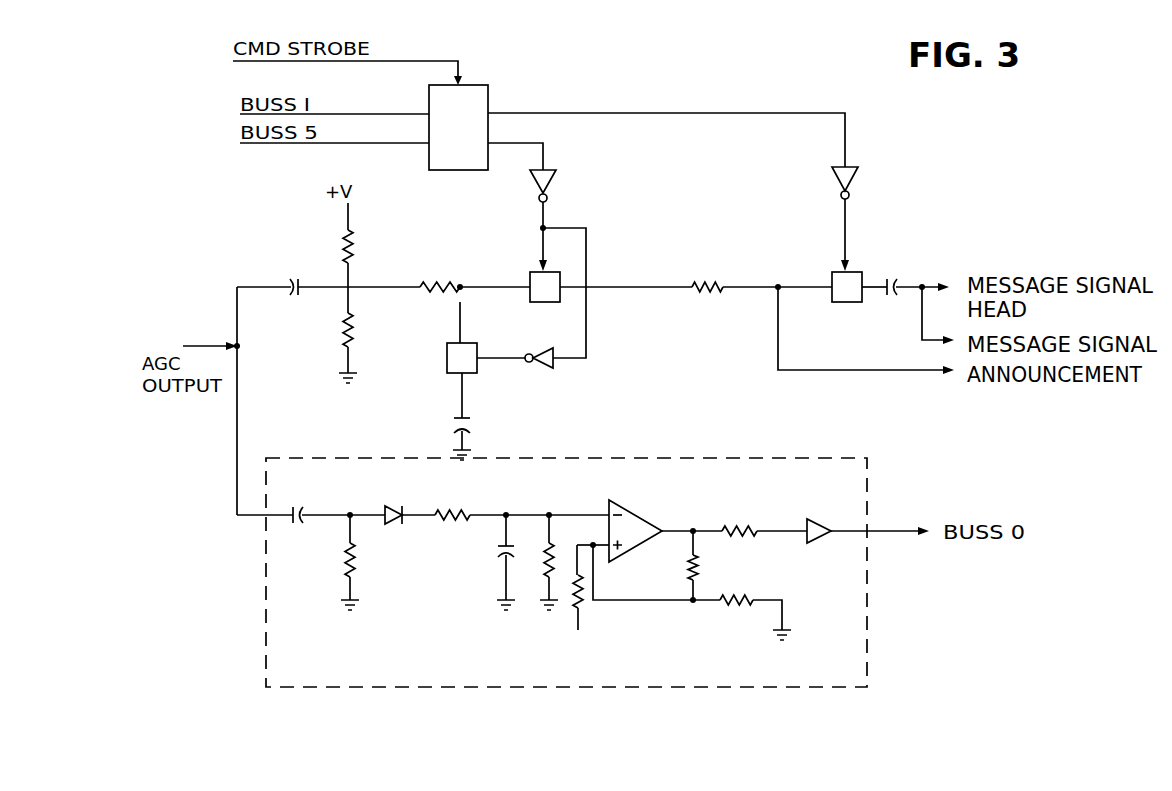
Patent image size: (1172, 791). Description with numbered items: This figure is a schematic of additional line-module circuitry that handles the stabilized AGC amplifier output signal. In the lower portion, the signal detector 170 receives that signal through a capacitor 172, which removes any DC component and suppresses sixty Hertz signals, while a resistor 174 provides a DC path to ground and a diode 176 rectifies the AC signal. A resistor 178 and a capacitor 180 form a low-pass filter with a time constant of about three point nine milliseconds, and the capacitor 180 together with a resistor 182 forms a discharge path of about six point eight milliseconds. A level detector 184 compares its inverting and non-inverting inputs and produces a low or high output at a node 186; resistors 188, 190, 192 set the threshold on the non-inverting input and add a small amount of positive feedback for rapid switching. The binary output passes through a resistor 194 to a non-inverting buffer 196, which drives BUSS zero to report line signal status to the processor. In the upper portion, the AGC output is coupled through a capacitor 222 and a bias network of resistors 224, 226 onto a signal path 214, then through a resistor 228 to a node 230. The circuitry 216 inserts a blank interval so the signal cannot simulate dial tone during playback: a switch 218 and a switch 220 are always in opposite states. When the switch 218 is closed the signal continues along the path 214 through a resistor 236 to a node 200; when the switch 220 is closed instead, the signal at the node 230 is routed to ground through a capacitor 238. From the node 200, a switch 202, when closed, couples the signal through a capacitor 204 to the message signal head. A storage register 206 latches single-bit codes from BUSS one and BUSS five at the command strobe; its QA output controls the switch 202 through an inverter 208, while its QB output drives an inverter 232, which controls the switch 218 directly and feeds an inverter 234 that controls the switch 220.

The signal detector 170 is at (600, 450).
The capacitor 172 is at (298, 502).
The resistor 174 is at (363, 562).
The diode 176 is at (392, 503).
The resistor 178 is at (463, 502).
The capacitor 180 is at (490, 555).
The resistor 182 is at (545, 560).
The level detector 184 is at (620, 502).
The node 186 is at (693, 525).
The resistor 188 is at (583, 603).
The resistor 190 is at (702, 568).
The resistor 192 is at (737, 607).
The resistor 194 is at (732, 522).
The non-inverting buffer 196 is at (827, 513).
The node 200 is at (778, 276).
The switch 202 is at (865, 273).
The capacitor 204 is at (907, 280).
The storage register 206 is at (492, 93).
The inverter 208 is at (857, 182).
The signal path 214 is at (377, 286).
The circuitry 216 is at (590, 221).
The switch 218 is at (538, 303).
The switch 220 is at (487, 347).
The capacitor 222 is at (305, 280).
The resistor 224 is at (363, 237).
The resistor 226 is at (371, 335).
The resistor 228 is at (448, 252).
The node 230 is at (463, 285).
The inverter 232 is at (558, 172).
The inverter 234 is at (545, 372).
The resistor 236 is at (697, 280).
The capacitor 238 is at (483, 422).